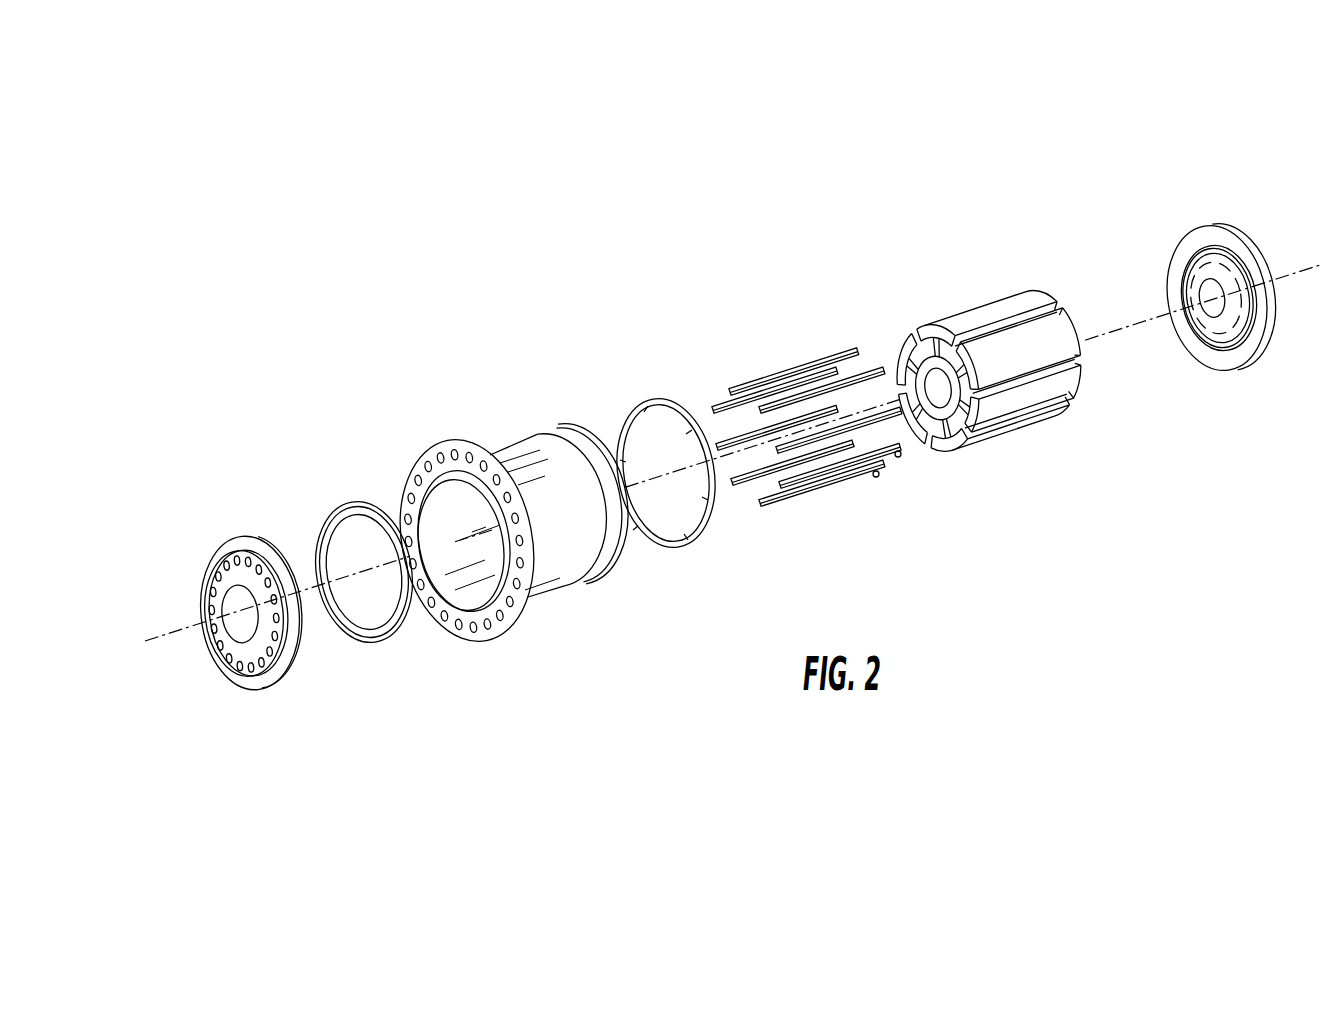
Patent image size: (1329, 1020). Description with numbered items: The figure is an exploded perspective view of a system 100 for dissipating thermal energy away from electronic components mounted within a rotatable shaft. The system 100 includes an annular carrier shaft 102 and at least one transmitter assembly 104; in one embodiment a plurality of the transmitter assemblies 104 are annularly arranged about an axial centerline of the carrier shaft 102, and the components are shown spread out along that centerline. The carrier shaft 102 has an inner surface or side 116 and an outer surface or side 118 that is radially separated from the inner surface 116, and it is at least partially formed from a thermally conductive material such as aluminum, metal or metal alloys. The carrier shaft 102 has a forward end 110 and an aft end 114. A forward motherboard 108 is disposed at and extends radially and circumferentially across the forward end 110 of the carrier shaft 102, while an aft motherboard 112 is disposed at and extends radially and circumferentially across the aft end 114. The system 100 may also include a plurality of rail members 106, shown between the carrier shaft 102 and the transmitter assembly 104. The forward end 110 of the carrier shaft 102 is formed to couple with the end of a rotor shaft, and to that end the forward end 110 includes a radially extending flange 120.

The system 100 is at (1170, 147).
The annular carrier shaft 102 is at (522, 427).
The transmitter assembly 104 is at (1010, 280).
The rail members 106 is at (810, 354).
The forward motherboard 108 is at (229, 524).
The forward end 110 is at (464, 645).
The aft motherboard 112 is at (1223, 227).
The aft end 114 is at (616, 585).
The inner surface 116 is at (463, 585).
The outer surface 118 is at (558, 583).
The radially extending flange 120 is at (430, 438).